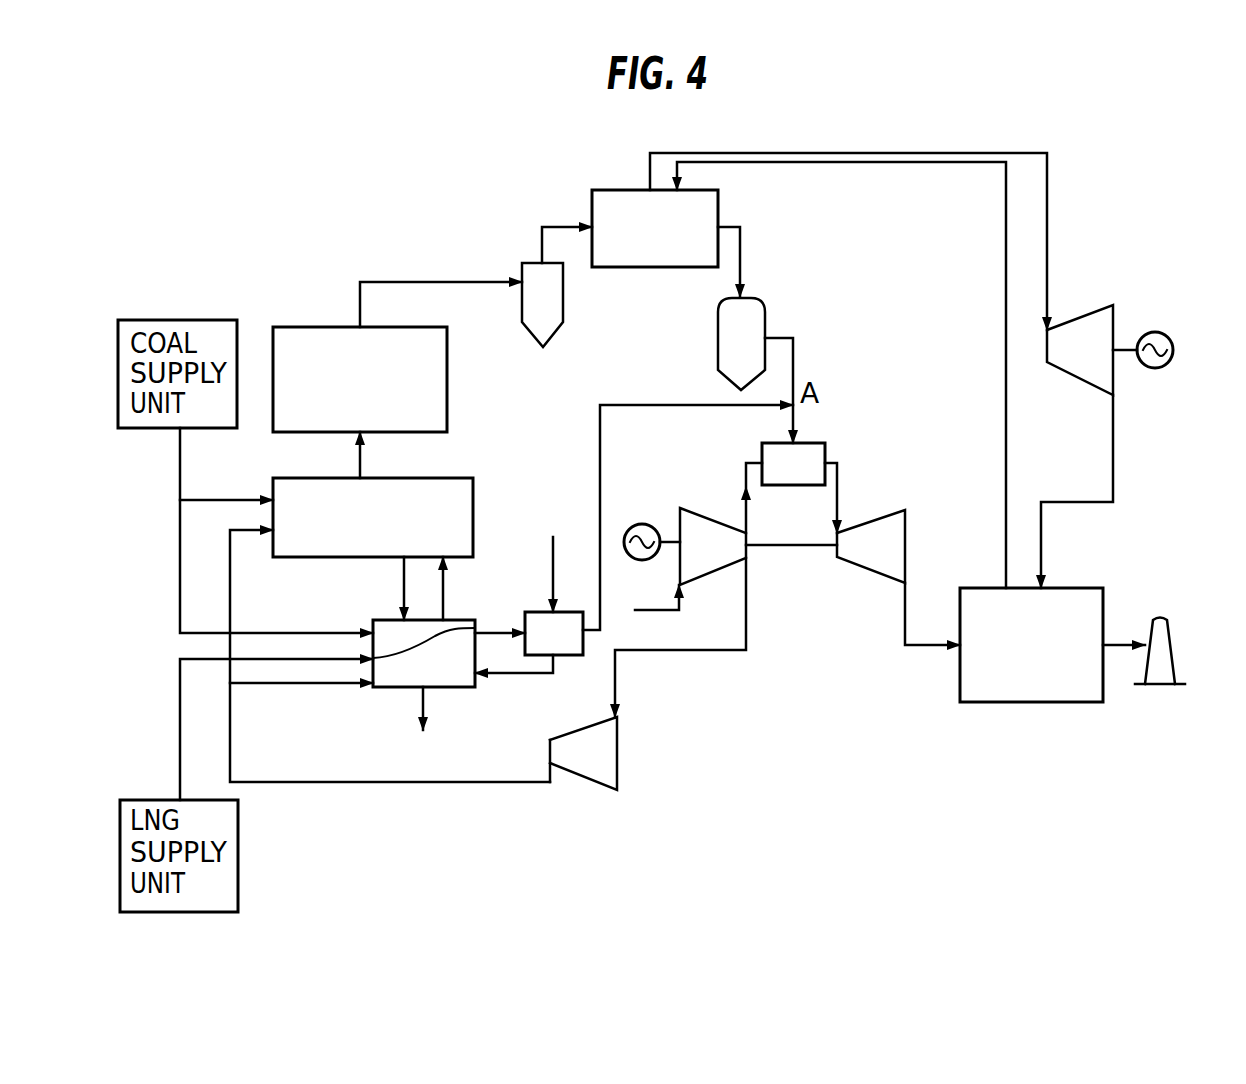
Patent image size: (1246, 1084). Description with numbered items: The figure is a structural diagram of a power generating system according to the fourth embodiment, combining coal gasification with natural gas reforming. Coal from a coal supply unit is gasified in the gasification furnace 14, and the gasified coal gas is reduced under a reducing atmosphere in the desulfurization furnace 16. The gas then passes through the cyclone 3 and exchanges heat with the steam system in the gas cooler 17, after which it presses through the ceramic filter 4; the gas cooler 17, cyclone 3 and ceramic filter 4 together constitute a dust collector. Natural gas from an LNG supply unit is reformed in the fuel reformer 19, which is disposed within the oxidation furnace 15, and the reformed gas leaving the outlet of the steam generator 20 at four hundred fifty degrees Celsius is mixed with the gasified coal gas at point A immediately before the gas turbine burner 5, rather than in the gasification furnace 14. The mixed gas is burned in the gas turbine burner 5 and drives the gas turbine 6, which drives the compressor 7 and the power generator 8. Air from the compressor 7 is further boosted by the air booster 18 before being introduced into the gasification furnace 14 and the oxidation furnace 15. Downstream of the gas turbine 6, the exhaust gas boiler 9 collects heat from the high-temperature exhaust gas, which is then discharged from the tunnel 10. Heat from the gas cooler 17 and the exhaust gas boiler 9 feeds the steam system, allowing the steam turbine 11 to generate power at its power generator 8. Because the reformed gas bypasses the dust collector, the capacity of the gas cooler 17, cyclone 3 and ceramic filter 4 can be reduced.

The cyclone 3 is at (528, 263).
The ceramic filter 4 is at (752, 299).
The gas turbine burner 5 is at (820, 443).
The gas turbine 6 is at (908, 522).
The compressor 7 is at (712, 520).
The power generator 8 is at (645, 560).
The exhaust gas boiler 9 is at (1068, 588).
The tunnel 10 is at (1172, 630).
The steam turbine 11 is at (1083, 316).
The gasification furnace 14 is at (447, 478).
The oxidation furnace 15 is at (460, 687).
The desulfurization furnace 16 is at (322, 327).
The gas cooler 17 is at (613, 190).
The air booster 18 is at (617, 748).
The fuel reformer 19 is at (403, 660).
The steam generator 20 is at (531, 623).